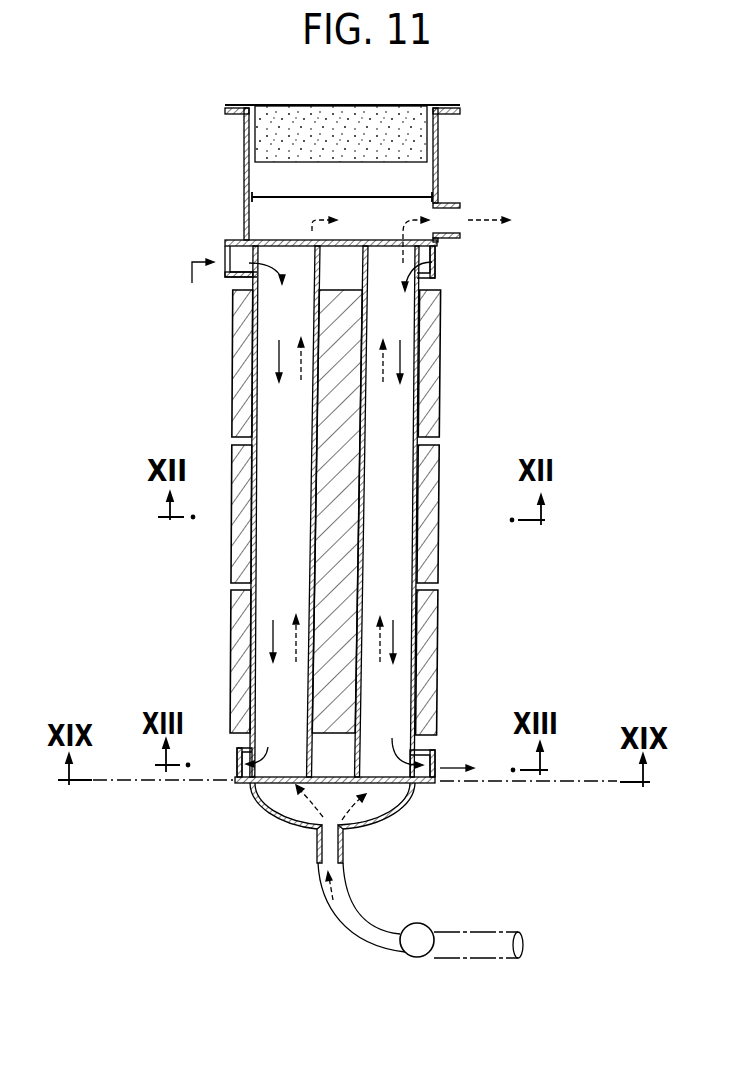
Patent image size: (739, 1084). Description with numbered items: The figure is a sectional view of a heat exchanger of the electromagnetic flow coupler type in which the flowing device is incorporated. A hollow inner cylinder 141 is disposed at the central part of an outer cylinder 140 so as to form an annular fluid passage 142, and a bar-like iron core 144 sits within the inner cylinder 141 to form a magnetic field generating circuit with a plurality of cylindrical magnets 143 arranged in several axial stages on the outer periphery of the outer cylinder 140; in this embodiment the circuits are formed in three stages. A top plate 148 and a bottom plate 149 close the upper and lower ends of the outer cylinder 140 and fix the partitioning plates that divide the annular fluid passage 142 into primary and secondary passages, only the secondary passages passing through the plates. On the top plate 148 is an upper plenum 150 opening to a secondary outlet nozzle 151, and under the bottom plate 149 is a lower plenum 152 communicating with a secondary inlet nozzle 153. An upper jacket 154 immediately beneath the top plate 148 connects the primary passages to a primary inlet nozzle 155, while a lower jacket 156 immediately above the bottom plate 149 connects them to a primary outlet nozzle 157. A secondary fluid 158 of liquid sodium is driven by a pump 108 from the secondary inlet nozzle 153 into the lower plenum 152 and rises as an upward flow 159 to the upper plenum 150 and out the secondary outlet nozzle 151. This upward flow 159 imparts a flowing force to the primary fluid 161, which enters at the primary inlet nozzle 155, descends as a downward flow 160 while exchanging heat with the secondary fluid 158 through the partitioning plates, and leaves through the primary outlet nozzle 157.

The pump 108 is at (425, 925).
The outer cylinder 140 is at (410, 497).
The hollow inner cylinder 141 is at (362, 478).
The annular fluid passage 142 is at (300, 499).
The cylindrical magnets 143 is at (434, 589).
The bar-like iron core 144 is at (347, 572).
The top plate 148 is at (293, 240).
The bottom plate 149 is at (380, 790).
The upper plenum 150 is at (385, 229).
The secondary outlet nozzle 151 is at (442, 203).
The lower plenum 152 is at (284, 798).
The secondary inlet nozzle 153 is at (343, 848).
The upper jacket 154 is at (420, 258).
The primary inlet nozzle 155 is at (233, 244).
The lower jacket 156 is at (240, 770).
The primary outlet nozzle 157 is at (437, 783).
The secondary fluid 158 is at (335, 898).
The upward flow 159 is at (290, 636).
The downward flow 160 is at (272, 648).
The primary fluid 161 is at (187, 285).